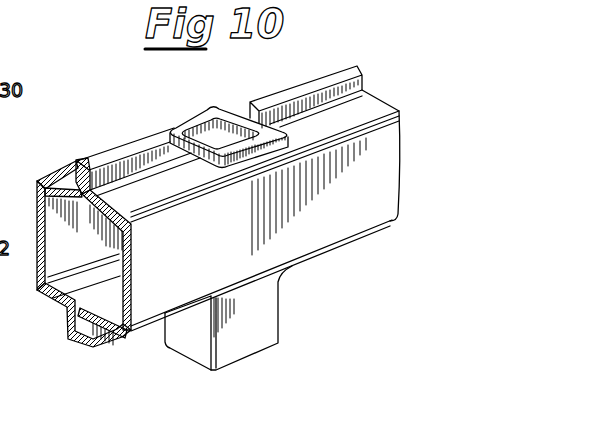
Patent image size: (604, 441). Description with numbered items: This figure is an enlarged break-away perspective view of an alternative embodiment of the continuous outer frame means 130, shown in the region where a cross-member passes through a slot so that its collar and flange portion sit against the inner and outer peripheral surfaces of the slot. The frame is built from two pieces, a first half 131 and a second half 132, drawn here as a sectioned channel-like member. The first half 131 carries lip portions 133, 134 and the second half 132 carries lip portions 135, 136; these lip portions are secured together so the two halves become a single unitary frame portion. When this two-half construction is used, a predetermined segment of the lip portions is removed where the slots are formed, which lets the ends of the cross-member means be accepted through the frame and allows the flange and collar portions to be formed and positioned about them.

The continuous outer frame means 130 is at (55, 171).
The first half 131 is at (33, 222).
The second half 132 is at (340, 220).
The lip portion 133 is at (117, 147).
The lip portion 134 is at (67, 324).
The lip portion 135 is at (362, 85).
The lip portion 136 is at (98, 338).